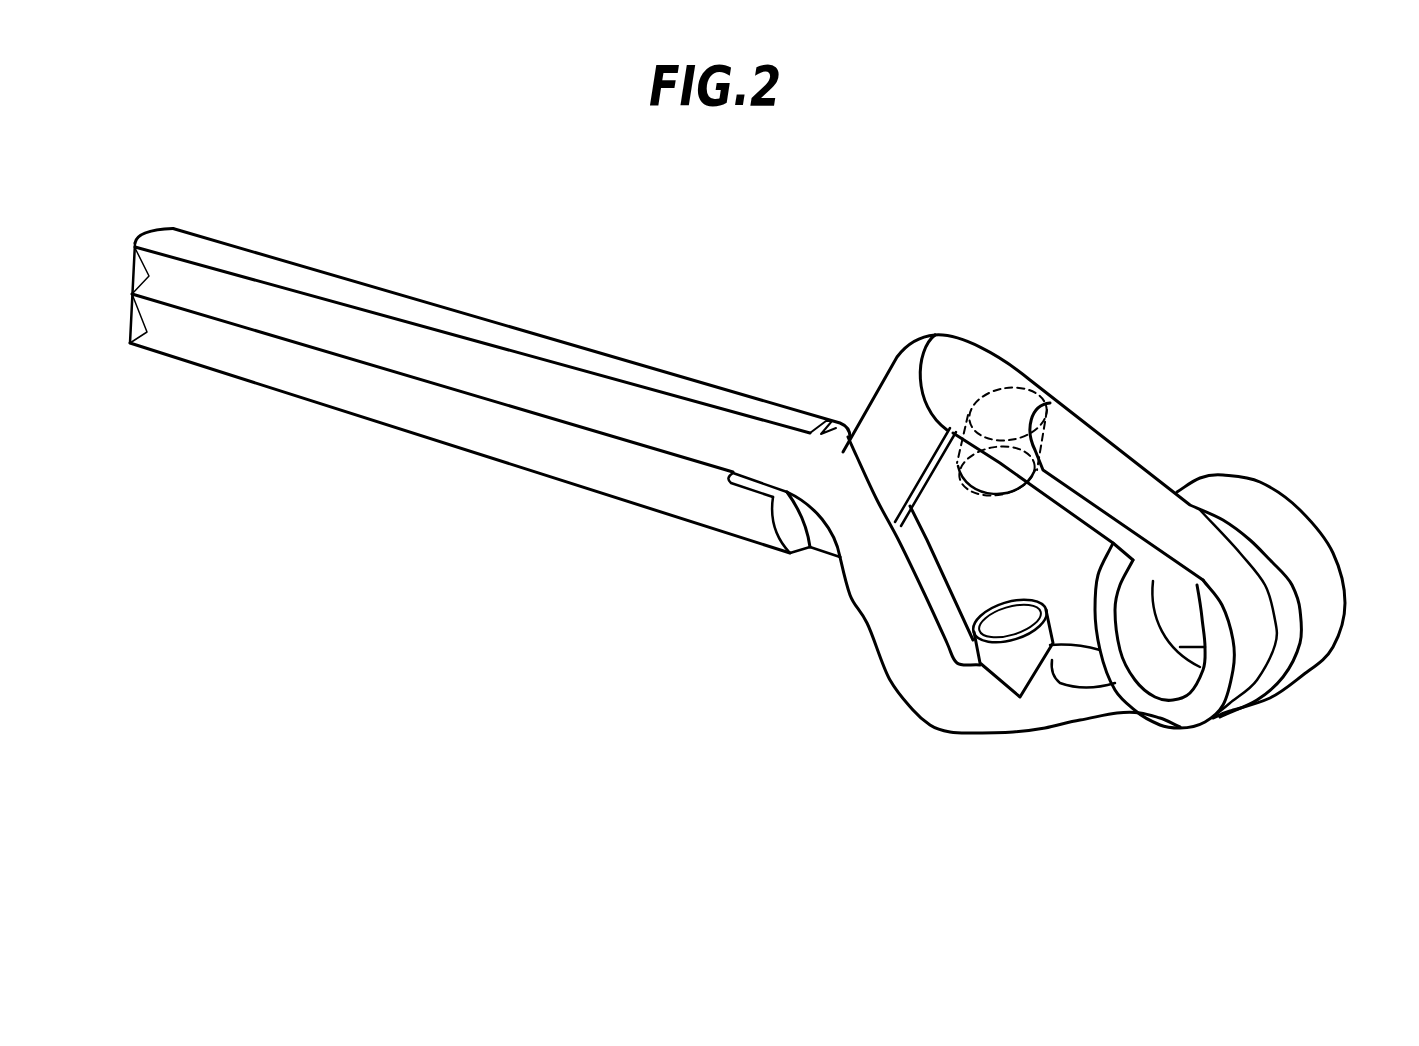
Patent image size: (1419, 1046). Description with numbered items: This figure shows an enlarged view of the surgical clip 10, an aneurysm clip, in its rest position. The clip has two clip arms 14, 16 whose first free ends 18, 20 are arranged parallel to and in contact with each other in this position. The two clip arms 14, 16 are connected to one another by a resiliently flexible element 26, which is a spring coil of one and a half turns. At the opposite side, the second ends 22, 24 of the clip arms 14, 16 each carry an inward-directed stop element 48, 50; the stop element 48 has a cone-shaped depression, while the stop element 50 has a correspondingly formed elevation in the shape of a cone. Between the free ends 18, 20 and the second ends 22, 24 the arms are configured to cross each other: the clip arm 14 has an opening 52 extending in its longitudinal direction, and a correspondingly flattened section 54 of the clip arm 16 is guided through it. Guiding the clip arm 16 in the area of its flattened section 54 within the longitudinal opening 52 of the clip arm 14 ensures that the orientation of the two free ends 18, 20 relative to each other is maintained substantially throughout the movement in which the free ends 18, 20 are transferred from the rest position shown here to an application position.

The surgical clip 10 is at (730, 303).
The clip arm 14 is at (415, 273).
The clip arm 16 is at (394, 460).
The first free end 18 is at (227, 258).
The first free end 20 is at (200, 370).
The second end 22 is at (1009, 331).
The second end 24 is at (1004, 757).
The resiliently flexible element 26 is at (1342, 664).
The stop element 48 is at (987, 483).
The stop element 50 is at (1017, 617).
The opening 52 is at (927, 580).
The flattened section 54 is at (874, 412).